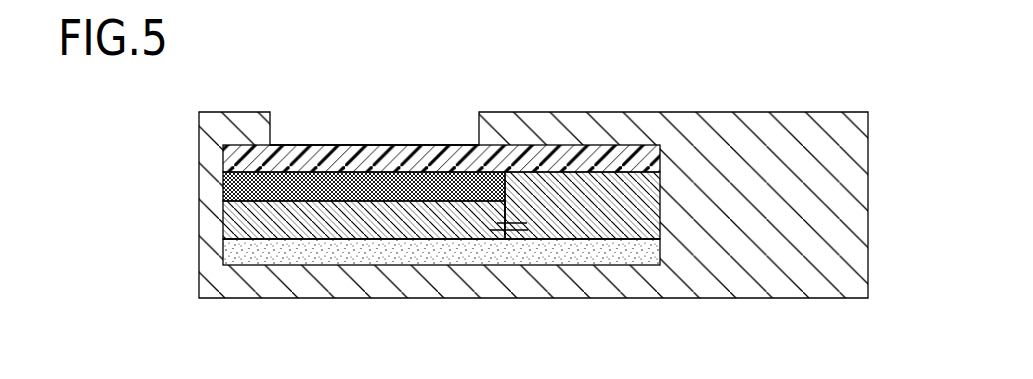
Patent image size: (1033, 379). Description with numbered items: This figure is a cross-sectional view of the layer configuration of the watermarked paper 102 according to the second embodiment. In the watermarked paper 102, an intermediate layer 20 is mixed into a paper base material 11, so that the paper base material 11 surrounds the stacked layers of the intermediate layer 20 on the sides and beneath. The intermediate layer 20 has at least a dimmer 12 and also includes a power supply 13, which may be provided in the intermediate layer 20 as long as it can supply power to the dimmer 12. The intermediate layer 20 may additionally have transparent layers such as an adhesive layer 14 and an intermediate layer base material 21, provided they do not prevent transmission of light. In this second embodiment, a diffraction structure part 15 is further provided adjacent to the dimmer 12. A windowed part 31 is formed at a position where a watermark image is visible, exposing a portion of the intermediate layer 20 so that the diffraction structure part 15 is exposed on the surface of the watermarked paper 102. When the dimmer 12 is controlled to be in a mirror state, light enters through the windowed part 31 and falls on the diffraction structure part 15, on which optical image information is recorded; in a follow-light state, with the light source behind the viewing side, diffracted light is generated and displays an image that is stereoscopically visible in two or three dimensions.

The watermarked paper 102 is at (808, 84).
The paper base material 11 is at (740, 130).
The intermediate layer base material 21 is at (568, 143).
The intermediate layer 20 is at (630, 140).
The power supply 13 is at (596, 224).
The dimmer 12 is at (306, 203).
The diffraction structure part 15 is at (256, 239).
The adhesive layer 14 is at (412, 240).
The windowed part 31 is at (270, 110).